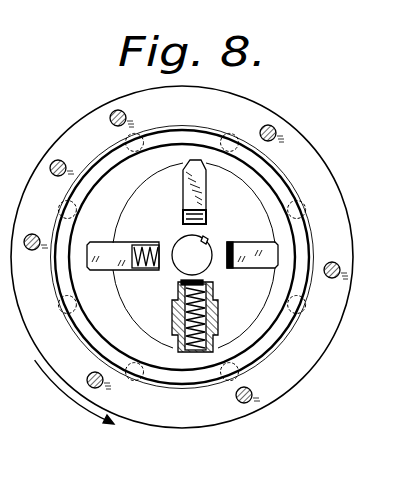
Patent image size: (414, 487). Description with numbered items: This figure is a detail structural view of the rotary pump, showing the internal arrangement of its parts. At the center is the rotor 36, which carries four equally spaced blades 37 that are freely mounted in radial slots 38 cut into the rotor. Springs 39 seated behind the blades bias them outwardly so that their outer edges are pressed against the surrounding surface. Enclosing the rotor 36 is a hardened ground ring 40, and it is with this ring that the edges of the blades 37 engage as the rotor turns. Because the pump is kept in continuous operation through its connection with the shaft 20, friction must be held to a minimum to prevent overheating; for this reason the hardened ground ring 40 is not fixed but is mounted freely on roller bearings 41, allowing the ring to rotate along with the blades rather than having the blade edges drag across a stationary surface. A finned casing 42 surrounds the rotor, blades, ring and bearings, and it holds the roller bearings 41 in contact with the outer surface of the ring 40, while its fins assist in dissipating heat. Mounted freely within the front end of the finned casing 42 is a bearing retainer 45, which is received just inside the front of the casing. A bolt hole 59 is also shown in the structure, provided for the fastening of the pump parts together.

The shaft 20 is at (192, 255).
The rotor 36 is at (131, 307).
The blades 37 is at (120, 250).
The radial slots 38 is at (227, 243).
The springs 39 is at (183, 222).
The hardened ground ring 40 is at (168, 147).
The roller bearings 41 is at (296, 200).
The finned casing 42 is at (233, 92).
The bearing retainer 45 is at (181, 388).
The bolt hole 59 is at (61, 164).